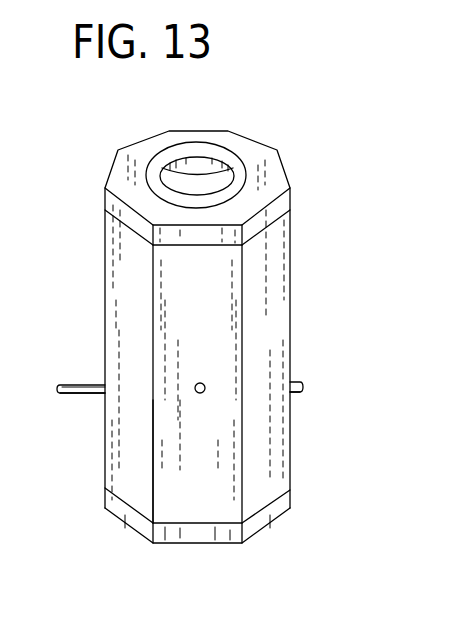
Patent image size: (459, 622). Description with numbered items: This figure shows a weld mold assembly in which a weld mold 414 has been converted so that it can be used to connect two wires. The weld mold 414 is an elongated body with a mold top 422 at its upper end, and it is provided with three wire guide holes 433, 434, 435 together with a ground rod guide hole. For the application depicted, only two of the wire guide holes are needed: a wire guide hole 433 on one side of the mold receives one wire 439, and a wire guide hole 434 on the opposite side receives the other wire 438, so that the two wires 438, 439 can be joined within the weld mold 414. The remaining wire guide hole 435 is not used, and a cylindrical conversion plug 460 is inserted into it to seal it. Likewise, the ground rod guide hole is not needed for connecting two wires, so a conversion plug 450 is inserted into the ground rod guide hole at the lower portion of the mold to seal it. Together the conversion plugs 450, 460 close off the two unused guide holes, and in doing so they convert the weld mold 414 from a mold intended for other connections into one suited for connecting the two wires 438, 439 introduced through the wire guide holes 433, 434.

The weld mold 414 is at (290, 258).
The mold top 422 is at (202, 132).
The wire guide hole 435 is at (198, 383).
The wire guide hole 433 is at (104, 382).
The wire 439 is at (80, 395).
The wire guide hole 434 is at (292, 378).
The wire 438 is at (300, 394).
The cylindrical conversion plug 460 is at (200, 394).
The conversion plug 450 is at (218, 547).